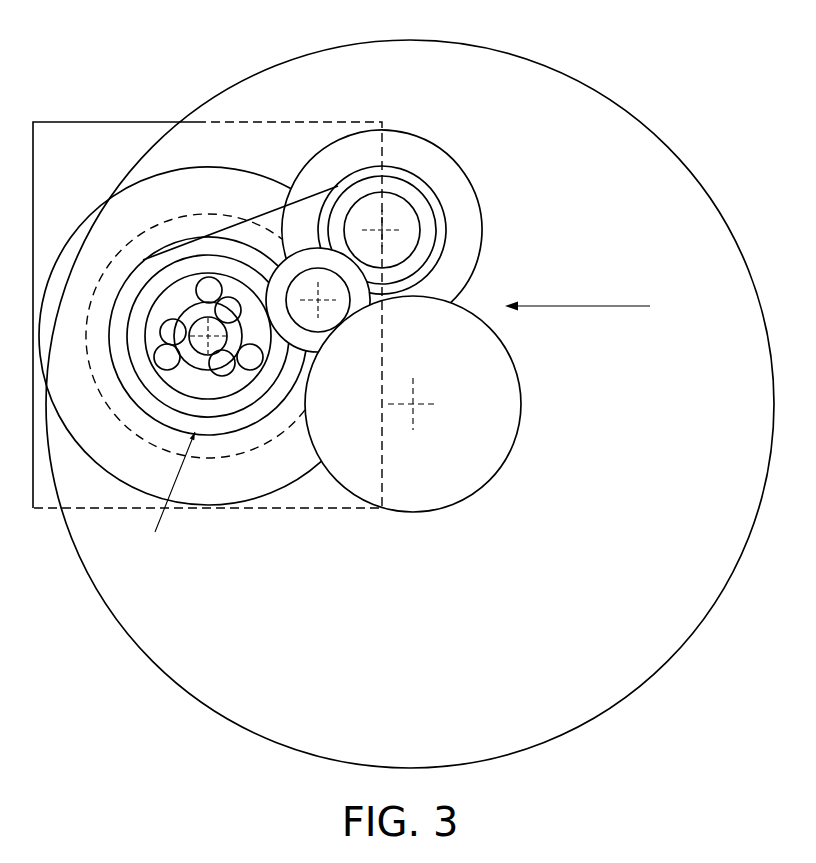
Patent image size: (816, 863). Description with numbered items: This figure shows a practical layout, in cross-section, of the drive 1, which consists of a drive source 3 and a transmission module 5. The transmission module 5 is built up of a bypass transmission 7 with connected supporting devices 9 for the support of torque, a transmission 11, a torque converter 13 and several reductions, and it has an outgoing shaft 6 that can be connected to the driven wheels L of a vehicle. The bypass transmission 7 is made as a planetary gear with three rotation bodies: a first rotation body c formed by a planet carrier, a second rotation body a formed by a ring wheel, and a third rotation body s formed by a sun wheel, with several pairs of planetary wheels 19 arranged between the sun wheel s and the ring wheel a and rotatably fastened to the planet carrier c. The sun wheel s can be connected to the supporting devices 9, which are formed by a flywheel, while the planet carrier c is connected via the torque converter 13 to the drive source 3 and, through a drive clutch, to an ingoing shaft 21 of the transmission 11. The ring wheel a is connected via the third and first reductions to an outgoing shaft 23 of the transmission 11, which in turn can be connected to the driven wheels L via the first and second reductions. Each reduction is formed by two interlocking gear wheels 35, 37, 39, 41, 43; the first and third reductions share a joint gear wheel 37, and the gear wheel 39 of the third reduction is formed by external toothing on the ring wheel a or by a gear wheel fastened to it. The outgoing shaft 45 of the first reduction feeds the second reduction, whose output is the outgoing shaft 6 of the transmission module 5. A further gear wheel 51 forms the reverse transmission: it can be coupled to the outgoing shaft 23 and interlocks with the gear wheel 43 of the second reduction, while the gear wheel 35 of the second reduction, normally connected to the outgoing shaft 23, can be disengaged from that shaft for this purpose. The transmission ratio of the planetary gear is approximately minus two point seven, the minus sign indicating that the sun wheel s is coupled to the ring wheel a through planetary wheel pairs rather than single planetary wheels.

The drive 1 is at (652, 110).
The drive source 3 is at (88, 120).
The transmission module 5 is at (588, 307).
The outgoing shaft 6 is at (415, 406).
The bypass transmission 7 is at (233, 397).
The supporting devices 9 is at (92, 230).
The transmission 11 is at (288, 197).
The torque converter 13 is at (117, 413).
The planetary wheels 19 is at (164, 330).
The ingoing shaft of the transmission 21 is at (192, 365).
The outgoing shaft of the transmission 23 is at (415, 197).
The gear wheel of the second reduction 35 is at (415, 248).
The joint gear wheel 37 is at (310, 250).
The gear wheel of the third reduction 39 is at (212, 433).
The gear wheel 41 is at (360, 305).
The gear wheel of the second reduction 43 is at (520, 377).
The outgoing shaft of the first reduction 45 is at (283, 235).
The further gear wheel 51 is at (445, 218).
The second rotation body a is at (169, 494).
The first rotation body c is at (247, 330).
The third rotation body s is at (190, 315).
The driven wheels L is at (640, 650).